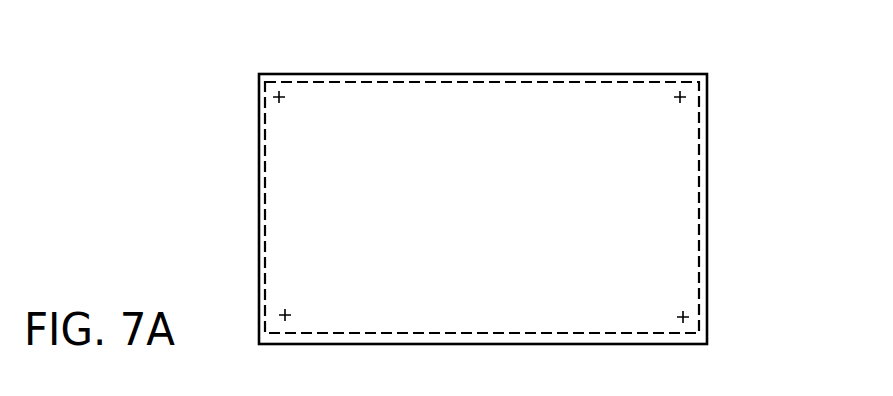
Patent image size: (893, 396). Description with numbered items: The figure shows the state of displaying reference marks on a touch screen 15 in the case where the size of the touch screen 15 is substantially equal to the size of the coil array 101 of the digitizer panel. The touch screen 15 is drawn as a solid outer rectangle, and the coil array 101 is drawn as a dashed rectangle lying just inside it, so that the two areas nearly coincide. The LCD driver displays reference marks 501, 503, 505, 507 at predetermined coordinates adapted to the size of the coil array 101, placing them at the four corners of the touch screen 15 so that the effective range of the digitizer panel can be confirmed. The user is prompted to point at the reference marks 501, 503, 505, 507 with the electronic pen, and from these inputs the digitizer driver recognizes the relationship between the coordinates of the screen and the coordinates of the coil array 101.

The touch screen 15 is at (573, 74).
The coil array 101 is at (444, 74).
The reference mark 501 is at (283, 95).
The reference mark 503 is at (684, 96).
The reference mark 505 is at (290, 313).
The reference mark 507 is at (688, 316).